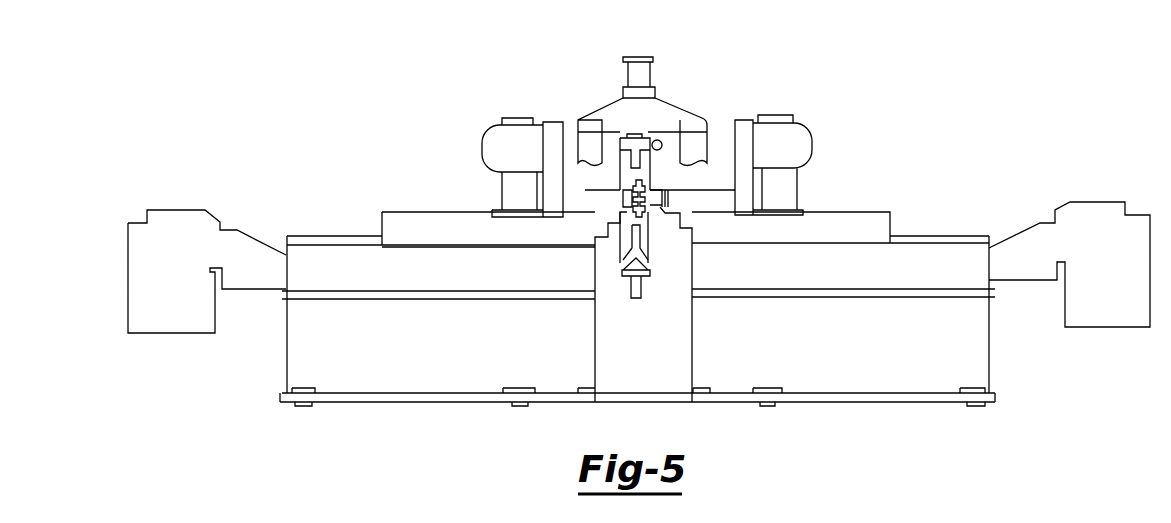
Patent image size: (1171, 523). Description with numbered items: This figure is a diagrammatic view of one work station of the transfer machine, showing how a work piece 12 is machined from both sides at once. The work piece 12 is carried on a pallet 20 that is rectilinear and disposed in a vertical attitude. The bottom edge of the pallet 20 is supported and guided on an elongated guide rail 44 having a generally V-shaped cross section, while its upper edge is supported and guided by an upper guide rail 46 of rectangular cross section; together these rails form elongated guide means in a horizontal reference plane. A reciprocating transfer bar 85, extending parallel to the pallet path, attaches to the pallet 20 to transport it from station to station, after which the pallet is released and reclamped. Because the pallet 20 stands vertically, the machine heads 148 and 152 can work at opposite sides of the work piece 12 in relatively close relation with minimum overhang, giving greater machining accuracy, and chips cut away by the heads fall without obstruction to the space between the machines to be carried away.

The work piece 12 is at (645, 217).
The pallet 20 is at (623, 250).
The elongated guide rail 44 is at (642, 270).
The upper guide rail 46 is at (637, 138).
The transfer bar 85 is at (662, 143).
The machine head 148 is at (587, 193).
The tool head 152 is at (652, 192).